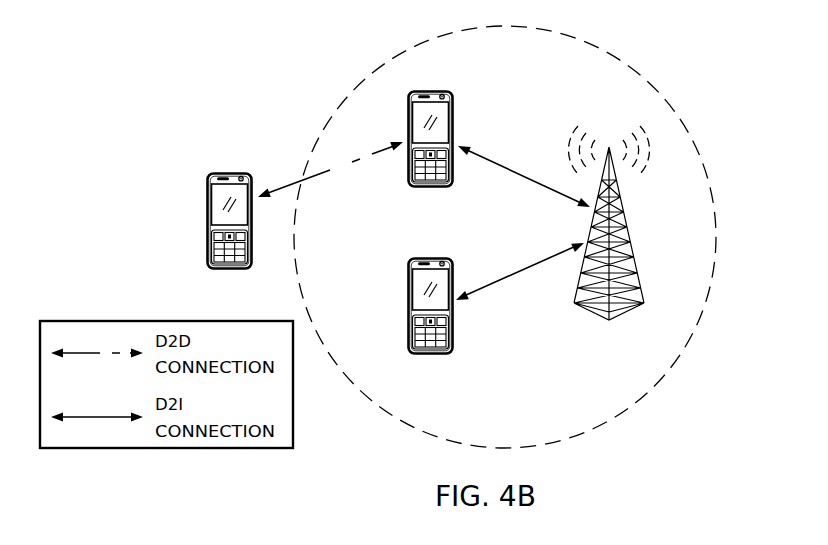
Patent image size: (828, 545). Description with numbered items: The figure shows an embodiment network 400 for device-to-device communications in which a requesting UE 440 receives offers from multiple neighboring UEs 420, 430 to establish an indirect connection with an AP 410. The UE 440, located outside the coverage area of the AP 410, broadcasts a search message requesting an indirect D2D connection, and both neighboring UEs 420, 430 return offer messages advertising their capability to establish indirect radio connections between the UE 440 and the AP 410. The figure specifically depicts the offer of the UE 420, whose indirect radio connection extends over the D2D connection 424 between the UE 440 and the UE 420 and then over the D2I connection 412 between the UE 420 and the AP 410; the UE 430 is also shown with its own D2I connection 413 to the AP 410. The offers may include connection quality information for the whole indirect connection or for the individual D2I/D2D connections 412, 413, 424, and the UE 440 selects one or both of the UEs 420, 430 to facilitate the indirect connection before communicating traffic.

The network 400 is at (297, 72).
The AP 410 is at (626, 314).
The D2I connection 412 is at (666, 84).
The D2I connection 413 is at (522, 276).
The UE 420 is at (454, 111).
The D2D connection 424 is at (333, 172).
The UE 430 is at (430, 357).
The UE 440 is at (206, 223).